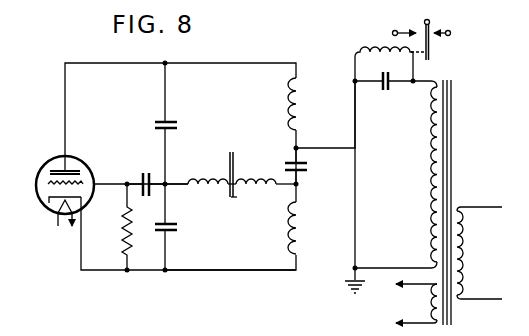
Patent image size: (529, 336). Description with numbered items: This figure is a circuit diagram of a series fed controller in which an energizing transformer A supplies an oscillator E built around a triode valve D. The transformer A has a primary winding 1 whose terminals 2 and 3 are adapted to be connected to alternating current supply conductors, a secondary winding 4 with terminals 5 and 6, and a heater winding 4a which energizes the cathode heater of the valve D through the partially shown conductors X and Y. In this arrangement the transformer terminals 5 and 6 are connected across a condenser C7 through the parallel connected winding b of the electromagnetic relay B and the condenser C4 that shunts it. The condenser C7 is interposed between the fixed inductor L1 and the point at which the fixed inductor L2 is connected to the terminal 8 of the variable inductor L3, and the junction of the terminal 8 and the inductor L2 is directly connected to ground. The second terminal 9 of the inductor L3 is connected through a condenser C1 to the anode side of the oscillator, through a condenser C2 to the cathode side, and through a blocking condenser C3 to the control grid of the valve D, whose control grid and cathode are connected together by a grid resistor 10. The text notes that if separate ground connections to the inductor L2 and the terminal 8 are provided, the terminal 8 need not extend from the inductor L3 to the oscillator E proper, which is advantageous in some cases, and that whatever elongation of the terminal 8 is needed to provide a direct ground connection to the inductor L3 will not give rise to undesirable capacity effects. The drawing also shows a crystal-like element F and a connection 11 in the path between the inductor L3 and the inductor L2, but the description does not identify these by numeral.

The triode valve D is at (46, 156).
The grid resistor 10 is at (122, 225).
The blocking condenser C3 is at (149, 172).
The second terminal of inductor L3 9 is at (176, 183).
The variable inductive element L3 is at (213, 189).
The piezoelectric crystal F is at (234, 162).
The crystal connection 11 is at (237, 197).
The terminal of variable inductor L3 8 is at (282, 178).
The condenser C1 is at (178, 125).
The condenser C2 is at (180, 227).
The fixed inductive element L1 is at (297, 106).
The fixed inductive element L2 is at (297, 232).
The condenser C7 is at (308, 167).
The oscillator E is at (237, 276).
The electromagnetic relay B is at (395, 40).
The relay winding b is at (383, 58).
The condenser C4 is at (388, 92).
The terminal of secondary winding 5 is at (420, 86).
The energizing transformer A is at (462, 108).
The secondary winding 4 is at (430, 167).
The second terminal conductor of secondary winding 6 is at (410, 267).
The heater winding 4a is at (430, 305).
The primary winding 1 is at (465, 254).
The primary winding terminal 3 is at (487, 205).
The primary winding terminal 2 is at (491, 298).